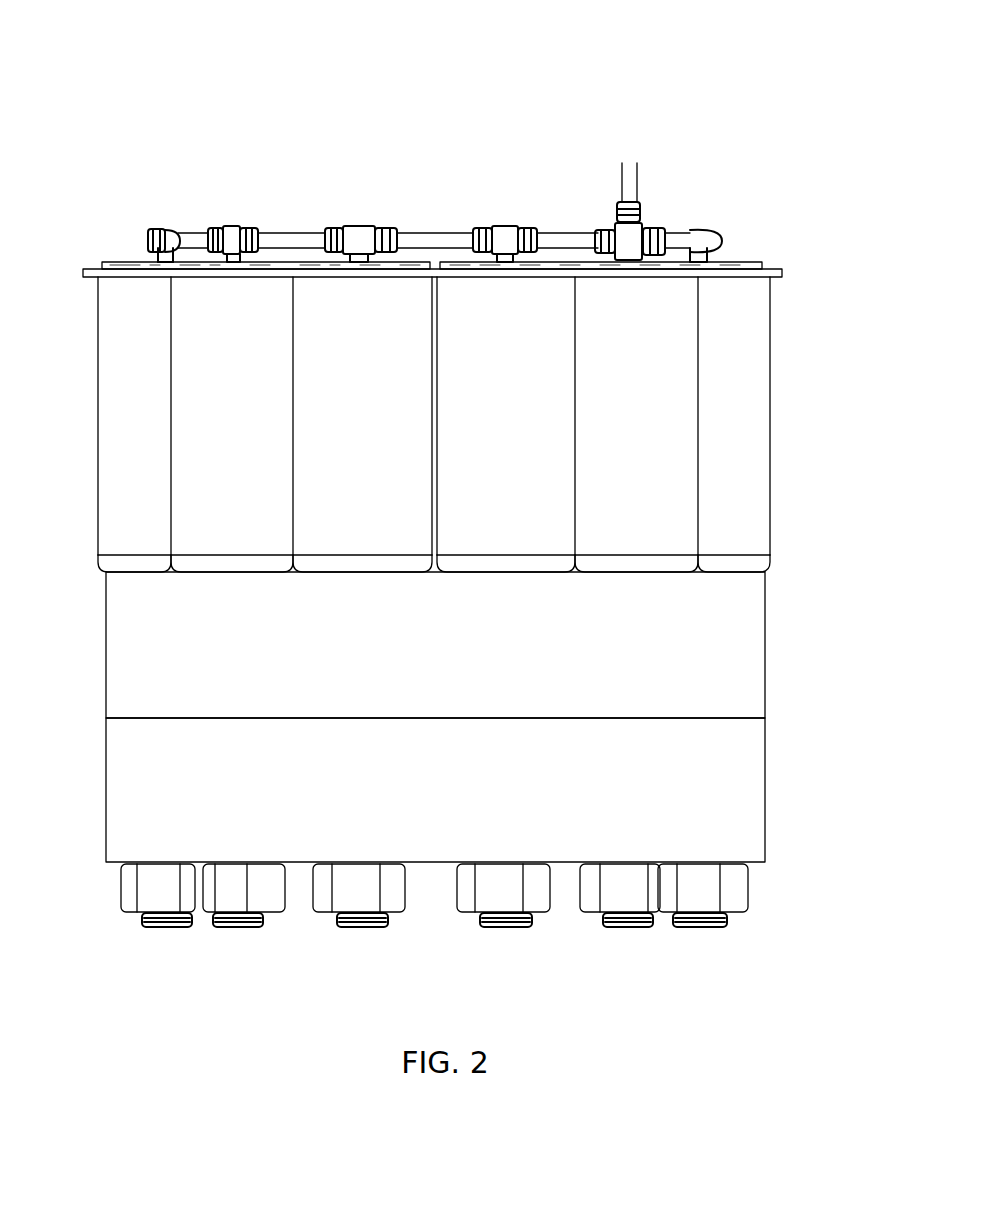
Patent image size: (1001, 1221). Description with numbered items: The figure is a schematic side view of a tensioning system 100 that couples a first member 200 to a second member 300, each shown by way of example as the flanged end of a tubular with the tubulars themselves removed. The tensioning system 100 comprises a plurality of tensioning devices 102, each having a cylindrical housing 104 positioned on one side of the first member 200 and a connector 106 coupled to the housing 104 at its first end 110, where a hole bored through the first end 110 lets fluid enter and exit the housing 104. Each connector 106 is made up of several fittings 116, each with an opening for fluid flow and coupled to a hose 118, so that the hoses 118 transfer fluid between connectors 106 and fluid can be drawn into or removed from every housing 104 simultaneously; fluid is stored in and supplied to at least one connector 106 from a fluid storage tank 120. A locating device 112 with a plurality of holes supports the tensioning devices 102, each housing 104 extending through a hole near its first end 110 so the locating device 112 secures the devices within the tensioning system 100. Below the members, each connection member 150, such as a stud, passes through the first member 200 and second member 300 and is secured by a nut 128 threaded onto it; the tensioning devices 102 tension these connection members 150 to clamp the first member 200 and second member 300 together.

The tensioning system 100 is at (242, 77).
The tensioning device 102 is at (142, 409).
The housing 104 is at (119, 379).
The connector 106 is at (235, 228).
The first end 110 is at (732, 282).
The locating device 112 is at (781, 274).
The fitting 116 is at (331, 228).
The hose 118 is at (291, 240).
The fluid storage tank 120 is at (613, 156).
The nut 128 is at (161, 900).
The connection member 150 is at (183, 928).
The first member 200 is at (419, 649).
The second member 300 is at (419, 802).